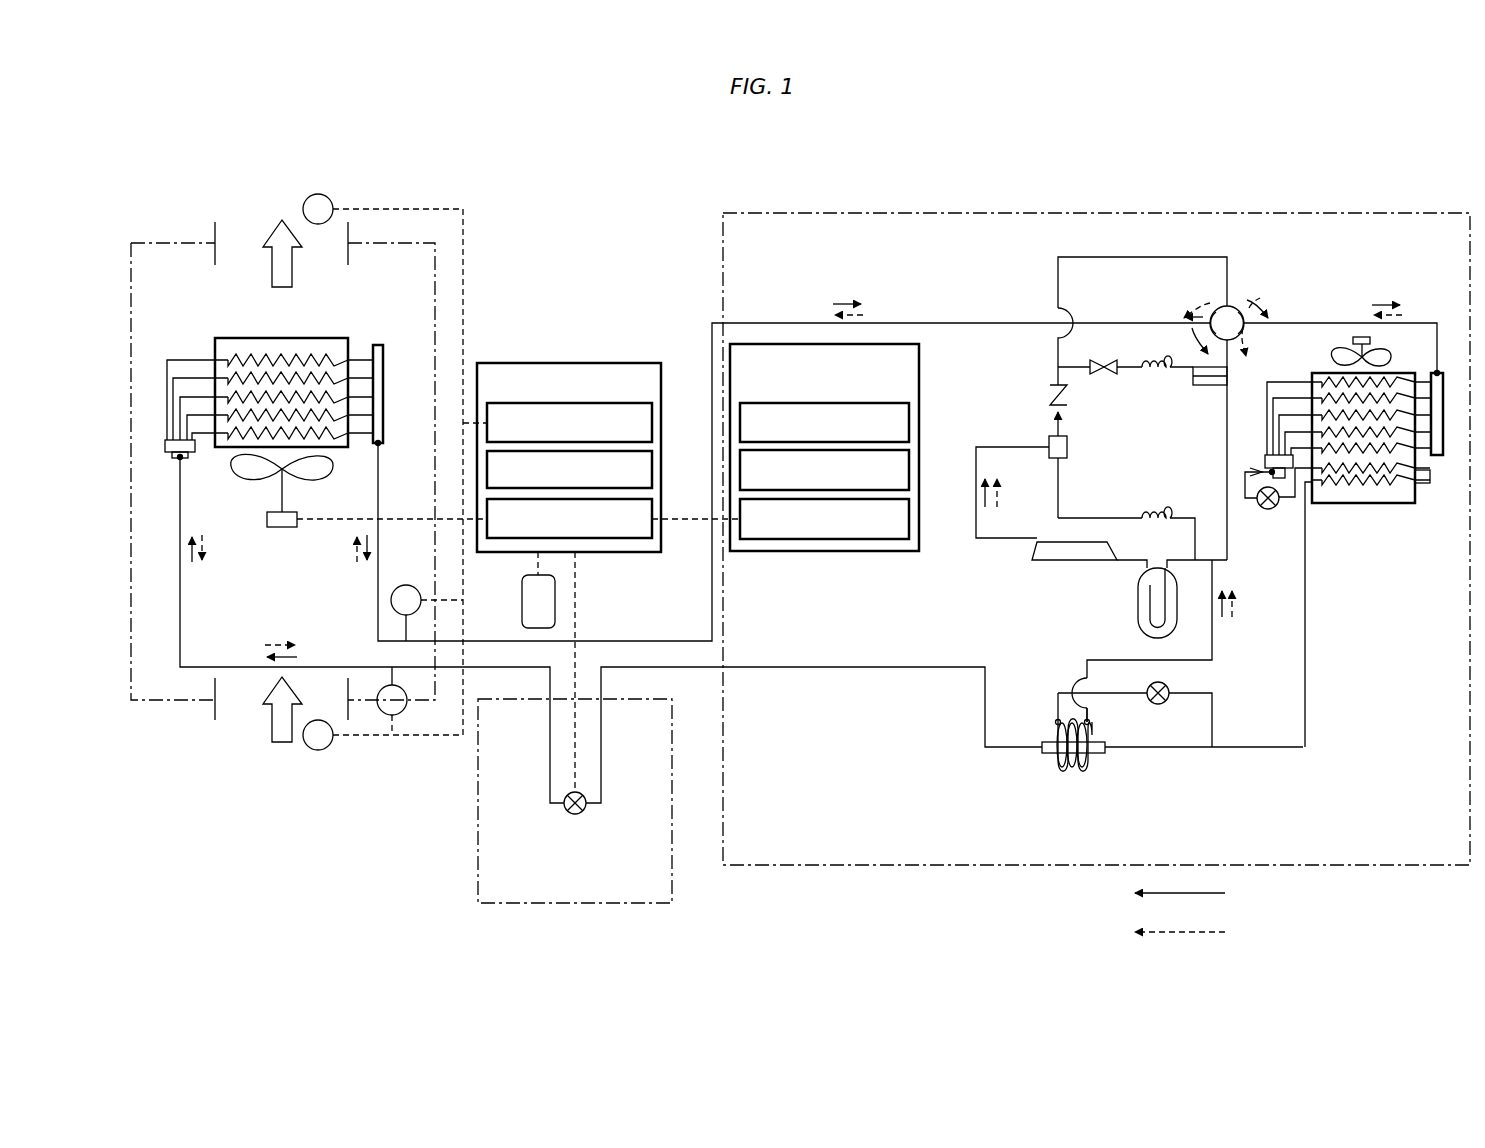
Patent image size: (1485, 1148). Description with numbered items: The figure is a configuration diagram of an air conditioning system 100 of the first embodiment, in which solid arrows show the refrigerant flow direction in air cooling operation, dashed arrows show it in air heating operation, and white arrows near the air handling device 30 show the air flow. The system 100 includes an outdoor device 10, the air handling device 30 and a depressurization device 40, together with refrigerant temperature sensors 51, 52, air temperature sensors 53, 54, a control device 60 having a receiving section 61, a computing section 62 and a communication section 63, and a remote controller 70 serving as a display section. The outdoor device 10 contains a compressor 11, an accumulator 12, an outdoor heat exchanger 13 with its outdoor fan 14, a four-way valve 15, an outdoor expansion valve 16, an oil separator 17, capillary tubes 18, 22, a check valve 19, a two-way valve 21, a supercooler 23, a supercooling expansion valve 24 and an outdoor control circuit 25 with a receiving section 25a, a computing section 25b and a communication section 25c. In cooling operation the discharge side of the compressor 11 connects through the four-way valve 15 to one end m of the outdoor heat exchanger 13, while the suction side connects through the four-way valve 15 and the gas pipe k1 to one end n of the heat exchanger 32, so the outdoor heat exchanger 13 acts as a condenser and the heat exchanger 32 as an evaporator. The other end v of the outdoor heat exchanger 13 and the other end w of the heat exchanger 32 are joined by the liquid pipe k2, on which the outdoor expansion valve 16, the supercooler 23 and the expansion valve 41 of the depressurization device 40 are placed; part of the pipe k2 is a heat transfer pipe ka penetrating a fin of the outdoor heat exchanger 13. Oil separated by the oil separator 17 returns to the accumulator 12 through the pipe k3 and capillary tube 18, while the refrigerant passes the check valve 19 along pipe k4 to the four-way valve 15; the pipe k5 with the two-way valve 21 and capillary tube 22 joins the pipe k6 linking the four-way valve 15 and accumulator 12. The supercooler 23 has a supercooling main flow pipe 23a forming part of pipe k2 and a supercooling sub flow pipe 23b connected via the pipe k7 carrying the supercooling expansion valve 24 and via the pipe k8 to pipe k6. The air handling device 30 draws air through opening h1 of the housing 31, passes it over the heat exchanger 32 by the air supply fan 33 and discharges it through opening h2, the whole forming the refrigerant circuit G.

The air conditioning system 100 is at (616, 190).
The outdoor device 10 is at (787, 210).
The air handling device 30 is at (176, 241).
The housing 31 is at (131, 292).
The heat exchanger 32 is at (285, 342).
The air supply fan 33 is at (282, 528).
The refrigerant temperature sensor 51 is at (406, 585).
The refrigerant temperature sensor 52 is at (400, 714).
The air temperature sensor 53 is at (318, 751).
The air temperature sensor 54 is at (330, 197).
The control device 60 is at (570, 364).
The receiving section 61 is at (652, 423).
The computing section 62 is at (652, 470).
The communication section 63 is at (652, 508).
The remote controller 70 is at (522, 610).
The depressurization device 40 is at (672, 895).
The expansion valve 41 is at (583, 813).
The outdoor control circuit 25 is at (919, 358).
The receiving section 25a is at (909, 423).
The computing section 25b is at (909, 470).
The communication section 25c is at (909, 508).
The compressor 11 is at (1065, 562).
The accumulator 12 is at (1138, 618).
The outdoor heat exchanger 13 is at (1415, 503).
The outdoor fan 14 is at (1335, 357).
The four-way valve 15 is at (1238, 308).
The outdoor expansion valve 16 is at (1270, 510).
The oil separator 17 is at (1070, 447).
The capillary tube 18 is at (1177, 488).
The check valve 19 is at (1050, 394).
The two-way valve 21 is at (1094, 362).
The capillary tube 22 is at (1158, 373).
The supercooler 23 is at (982, 773).
The supercooling main flow pipe 23a is at (1045, 757).
The supercooling sub flow pipe 23b is at (1068, 770).
The supercooling expansion valve 24 is at (1167, 684).
The opening h1 is at (240, 703).
The opening h2 is at (238, 236).
The other end of the heat exchanger w is at (177, 462).
The one end of the heat exchanger n is at (380, 448).
The one end of the outdoor heat exchanger m is at (1441, 369).
The other end of the outdoor heat exchanger v is at (1264, 468).
The heat transfer pipe ka is at (1368, 482).
The pipe k1 is at (640, 640).
The pipe k2 is at (685, 668).
The pipe k3 is at (1077, 518).
The pipe k4 is at (1148, 258).
The pipe k5 is at (1132, 369).
The pipe k6 is at (1227, 457).
The pipe k7 is at (1212, 716).
The pipe k8 is at (1212, 641).
The refrigerant circuit G is at (1120, 757).